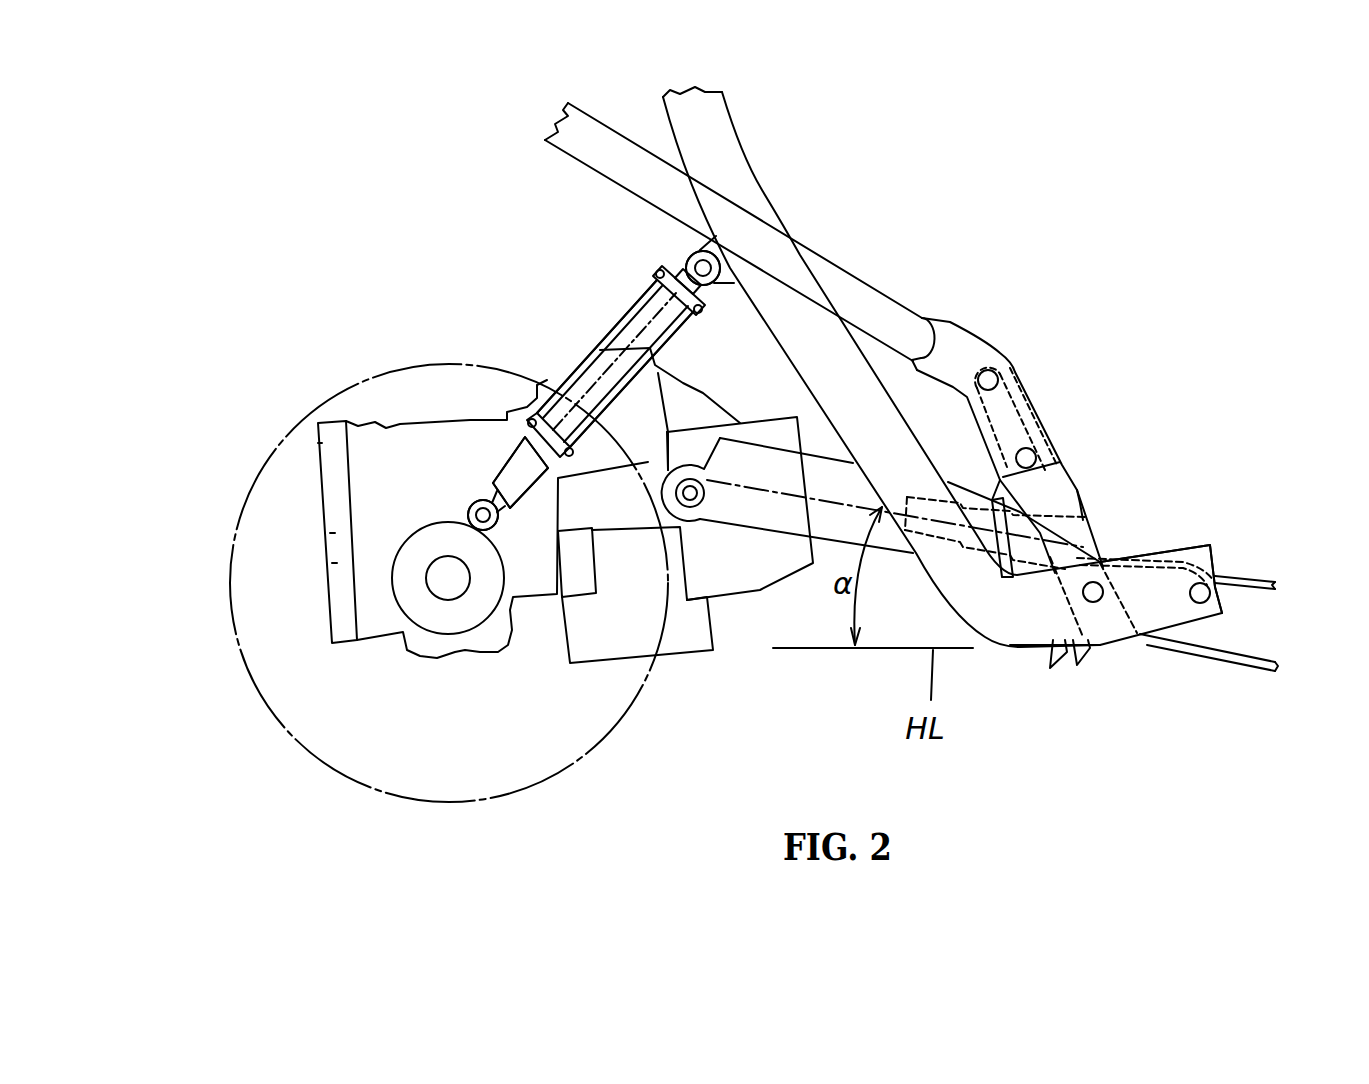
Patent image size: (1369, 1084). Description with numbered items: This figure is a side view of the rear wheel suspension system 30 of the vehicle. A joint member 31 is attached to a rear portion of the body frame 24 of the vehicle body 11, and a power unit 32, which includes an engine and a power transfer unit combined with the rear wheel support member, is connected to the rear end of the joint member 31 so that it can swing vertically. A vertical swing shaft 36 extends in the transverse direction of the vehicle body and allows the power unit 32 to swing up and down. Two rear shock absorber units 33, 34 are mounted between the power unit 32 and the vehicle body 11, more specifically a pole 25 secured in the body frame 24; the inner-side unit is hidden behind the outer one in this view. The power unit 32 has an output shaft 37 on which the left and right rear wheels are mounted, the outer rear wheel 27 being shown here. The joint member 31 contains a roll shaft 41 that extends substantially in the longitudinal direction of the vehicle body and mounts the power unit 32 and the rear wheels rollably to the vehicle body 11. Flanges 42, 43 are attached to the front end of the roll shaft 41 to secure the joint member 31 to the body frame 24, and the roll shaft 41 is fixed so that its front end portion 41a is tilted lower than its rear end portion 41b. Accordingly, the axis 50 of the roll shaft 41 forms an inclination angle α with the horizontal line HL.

The vehicle body 11 is at (1253, 563).
The body frame 24 is at (1230, 672).
The pole 25 is at (743, 152).
The rear wheel 27 is at (232, 615).
The rear wheel suspension system 30 is at (540, 318).
The joint member 31 is at (822, 450).
The power unit 32 is at (470, 415).
The rear shock absorber unit 33 is at (617, 320).
The rear shock absorber unit 34 is at (617, 320).
The vertical swing shaft 36 is at (698, 508).
The output shaft 37 is at (452, 600).
The roll shaft 41 is at (1003, 455).
The front end portion 41a is at (1097, 540).
The rear end portion 41b is at (905, 500).
The flange 42 is at (1082, 670).
The flange 43 is at (1053, 673).
The axis 50 is at (1003, 577).